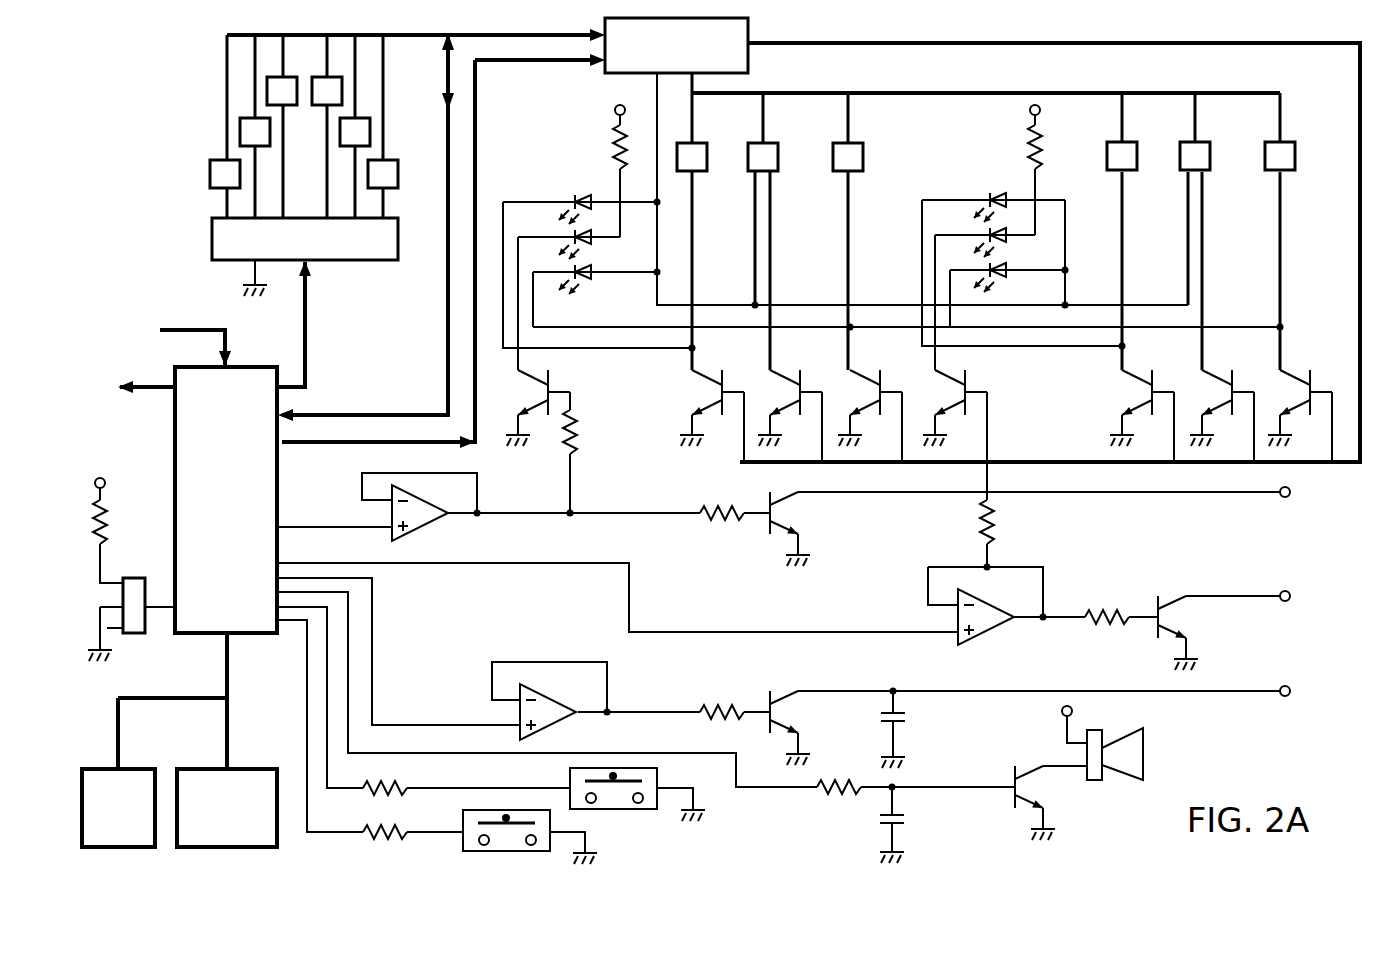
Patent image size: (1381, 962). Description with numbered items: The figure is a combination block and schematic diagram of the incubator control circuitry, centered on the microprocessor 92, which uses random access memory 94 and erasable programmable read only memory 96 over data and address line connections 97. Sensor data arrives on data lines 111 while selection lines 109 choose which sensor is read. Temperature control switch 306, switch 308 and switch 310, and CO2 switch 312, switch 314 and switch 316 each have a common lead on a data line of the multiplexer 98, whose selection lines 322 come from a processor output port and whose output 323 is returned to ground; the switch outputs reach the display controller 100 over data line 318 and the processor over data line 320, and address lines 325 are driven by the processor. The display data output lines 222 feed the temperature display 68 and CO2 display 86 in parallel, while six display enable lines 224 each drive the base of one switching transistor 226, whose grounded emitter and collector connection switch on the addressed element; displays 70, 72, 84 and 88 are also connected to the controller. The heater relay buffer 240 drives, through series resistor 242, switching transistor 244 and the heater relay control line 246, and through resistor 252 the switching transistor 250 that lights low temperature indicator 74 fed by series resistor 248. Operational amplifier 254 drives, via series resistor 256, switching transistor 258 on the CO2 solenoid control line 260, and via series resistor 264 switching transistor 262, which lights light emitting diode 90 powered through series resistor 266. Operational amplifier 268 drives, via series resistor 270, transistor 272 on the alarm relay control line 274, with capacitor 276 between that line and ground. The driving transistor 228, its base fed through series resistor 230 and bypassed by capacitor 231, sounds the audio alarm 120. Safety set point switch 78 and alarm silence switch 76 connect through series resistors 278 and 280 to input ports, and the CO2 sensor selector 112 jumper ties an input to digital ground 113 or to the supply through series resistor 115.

The data line 318 is at (226, 50).
The switch 310 is at (267, 90).
The switch 308 is at (240, 132).
The switch 306 is at (210, 178).
The switch 312 is at (340, 88).
The switch 314 is at (370, 128).
The switch 316 is at (398, 178).
The output of multiplexer 323 is at (253, 278).
The multiplexer 98 is at (335, 262).
The digital ground 113 is at (266, 290).
The data lines 111 is at (195, 328).
The selection lines 109 is at (145, 385).
The data line 320 is at (448, 330).
The selection lines 322 is at (310, 364).
The address lines 325 is at (478, 88).
The series resistor 248 is at (615, 150).
The display 70 is at (580, 195).
The low temperature indicator 74 is at (588, 240).
The display 72 is at (585, 278).
The display controller 100 is at (750, 30).
The display data output lines 222 is at (945, 93).
The display enable lines 224 is at (1160, 43).
The temperature display 68 is at (707, 152).
The series resistor 266 is at (1030, 150).
The display 84 is at (995, 195).
The light emitting diode 90 is at (1003, 238).
The display 88 is at (1003, 275).
The CO2 display 86 is at (1137, 155).
The switching transistors 226 is at (724, 380).
The switching transistor 250 is at (552, 375).
The resistor 252 is at (575, 432).
The switching transistor 262 is at (967, 375).
The heater relay control line 246 is at (1282, 495).
The series resistor 115 is at (103, 525).
The CO2 sensor selector 112 is at (145, 595).
The heater relay buffer 240 is at (420, 538).
The series resistor 242 is at (702, 520).
The switching transistor 244 is at (768, 528).
The series resistor 264 is at (991, 520).
The series resistor 256 is at (1102, 613).
The switching transistor 258 is at (1166, 590).
The operational amplifier 254 is at (980, 640).
The CO2 solenoid control line 260 is at (1226, 598).
The microprocessor 92 is at (235, 640).
The data and address line connections 97 is at (160, 700).
The random access memory 94 is at (125, 770).
The erasable programmable read only memory 96 is at (277, 775).
The series resistor 270 is at (716, 700).
The transistor 272 is at (772, 692).
The operational amplifier 268 is at (560, 725).
The capacitor 276 is at (906, 716).
The alarm relay control line 274 is at (1215, 692).
The series resistor 278 is at (396, 790).
The safety set point switch 78 is at (570, 782).
The series resistor 280 is at (360, 838).
The alarm silence switch 76 is at (463, 845).
The series resistor 230 is at (836, 800).
The bypass capacitor 231 is at (906, 818).
The driving transistor 228 is at (1010, 786).
The audio alarm 120 is at (1146, 735).